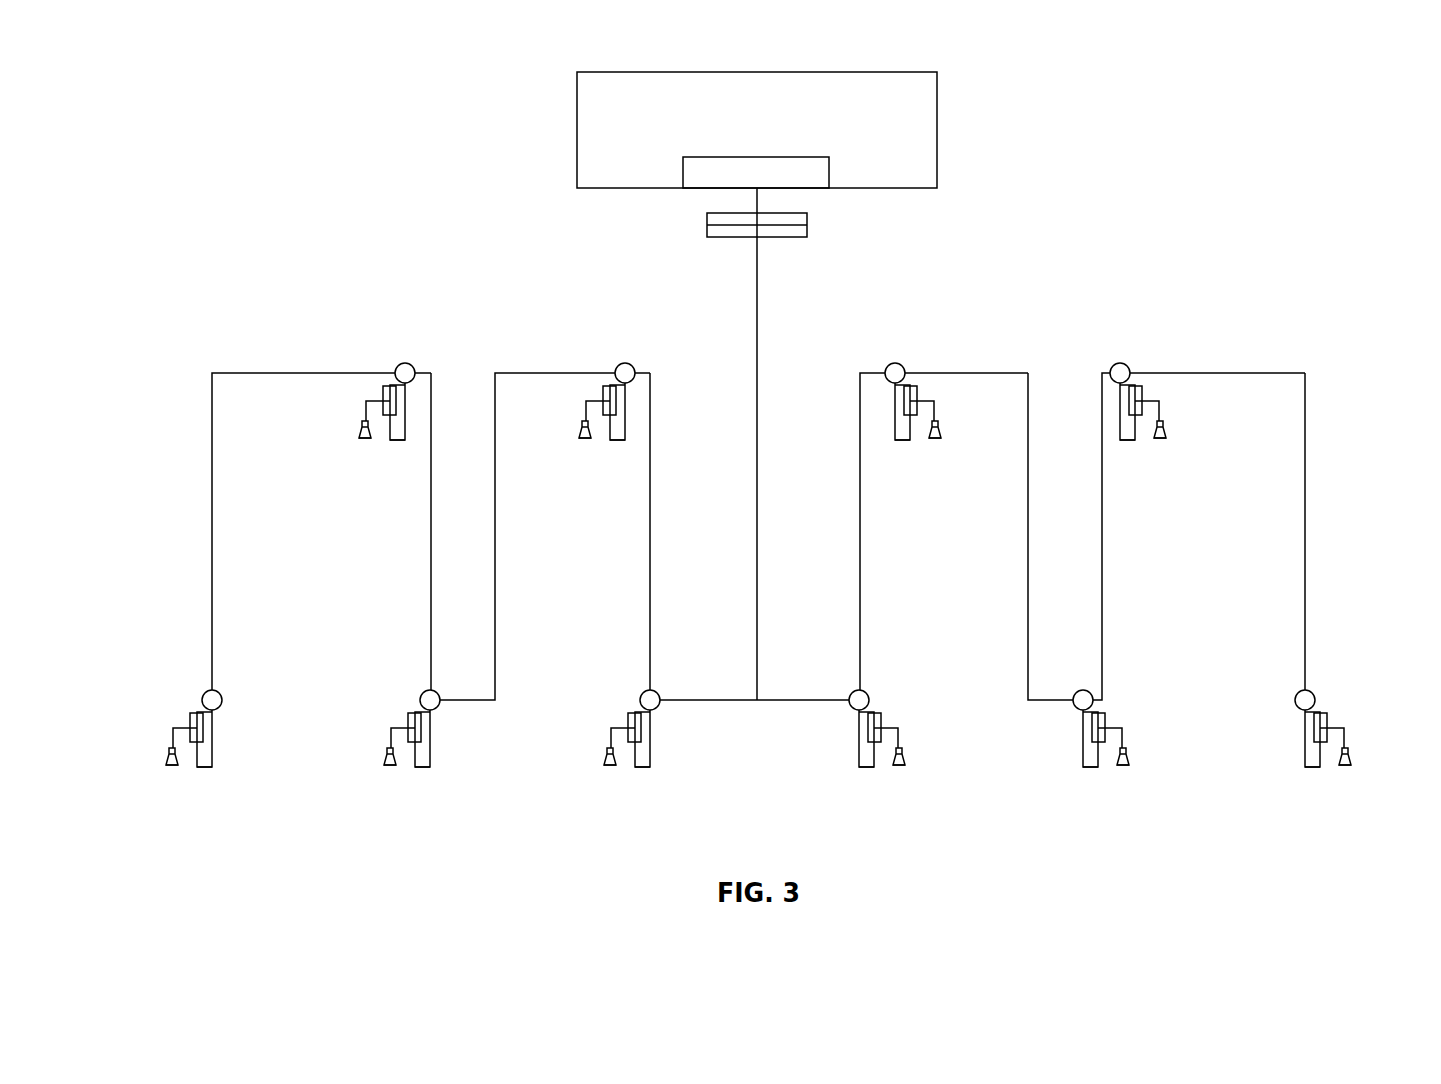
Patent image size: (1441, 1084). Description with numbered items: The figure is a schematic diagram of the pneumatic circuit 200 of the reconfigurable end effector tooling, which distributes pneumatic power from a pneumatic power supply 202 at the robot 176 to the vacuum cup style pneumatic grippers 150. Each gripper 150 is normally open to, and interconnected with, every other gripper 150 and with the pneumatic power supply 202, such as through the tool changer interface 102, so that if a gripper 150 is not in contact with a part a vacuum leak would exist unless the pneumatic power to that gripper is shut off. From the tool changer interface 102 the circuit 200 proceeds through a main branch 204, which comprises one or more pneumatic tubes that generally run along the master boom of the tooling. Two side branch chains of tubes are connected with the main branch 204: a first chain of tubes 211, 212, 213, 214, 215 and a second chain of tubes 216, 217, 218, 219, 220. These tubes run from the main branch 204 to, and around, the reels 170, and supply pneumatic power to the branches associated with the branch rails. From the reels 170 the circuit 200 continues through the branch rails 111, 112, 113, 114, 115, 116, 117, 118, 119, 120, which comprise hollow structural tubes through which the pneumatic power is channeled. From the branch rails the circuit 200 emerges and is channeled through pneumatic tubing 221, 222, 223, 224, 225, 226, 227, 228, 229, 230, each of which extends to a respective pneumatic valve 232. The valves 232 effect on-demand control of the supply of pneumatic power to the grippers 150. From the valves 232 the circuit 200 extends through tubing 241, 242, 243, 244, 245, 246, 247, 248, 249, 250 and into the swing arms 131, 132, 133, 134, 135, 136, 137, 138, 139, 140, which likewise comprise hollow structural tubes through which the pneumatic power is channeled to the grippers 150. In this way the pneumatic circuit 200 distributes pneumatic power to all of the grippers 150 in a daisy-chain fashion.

The pneumatic circuit 200 is at (1049, 24).
The robot 176 is at (779, 123).
The pneumatic power supply 202 is at (829, 173).
The tool changer interface 102 is at (707, 222).
The main branch 204 is at (757, 263).
The side branch chain tube 211 is at (705, 698).
The side branch chain tube 212 is at (650, 548).
The side branch chain tube 213 is at (530, 373).
The side branch chain tube 214 is at (431, 580).
The side branch chain tube 215 is at (212, 440).
The side branch chain tube 216 is at (768, 702).
The side branch chain tube 217 is at (860, 558).
The side branch chain tube 218 is at (1028, 560).
The side branch chain tube 219 is at (1102, 558).
The side branch chain tube 220 is at (1257, 373).
The reel 170 is at (758, 502).
The branch rail 111 is at (245, 738).
The branch rail 112 is at (438, 411).
The branch rail 113 is at (463, 738).
The branch rail 114 is at (658, 411).
The branch rail 115 is at (683, 738).
The branch rail 116 is at (824, 738).
The branch rail 117 is at (860, 411).
The branch rail 118 is at (1048, 738).
The branch rail 119 is at (1085, 411).
The branch rail 120 is at (1270, 738).
The swing arm 131 is at (131, 762).
The swing arm 132 is at (324, 435).
The swing arm 133 is at (349, 762).
The swing arm 134 is at (544, 435).
The swing arm 135 is at (569, 762).
The swing arm 136 is at (940, 762).
The swing arm 137 is at (976, 435).
The swing arm 138 is at (1164, 762).
The swing arm 139 is at (1201, 435).
The swing arm 140 is at (1386, 762).
The pneumatic gripper 150 is at (756, 635).
The pneumatic valve 232 is at (758, 568).
The pneumatic tubing 221 is at (235, 786).
The pneumatic tubing 222 is at (433, 469).
The pneumatic tubing 223 is at (453, 786).
The pneumatic tubing 224 is at (653, 469).
The pneumatic tubing 225 is at (673, 786).
The pneumatic tubing 226 is at (836, 786).
The pneumatic tubing 227 is at (866, 469).
The pneumatic tubing 228 is at (1060, 786).
The pneumatic tubing 229 is at (1091, 469).
The pneumatic tubing 230 is at (1282, 786).
The tubing 241 is at (197, 777).
The tubing 242 is at (390, 450).
The tubing 243 is at (415, 777).
The tubing 244 is at (610, 450).
The tubing 245 is at (635, 777).
The tubing 246 is at (874, 777).
The tubing 247 is at (910, 450).
The tubing 248 is at (1098, 777).
The tubing 249 is at (1135, 450).
The tubing 250 is at (1320, 777).